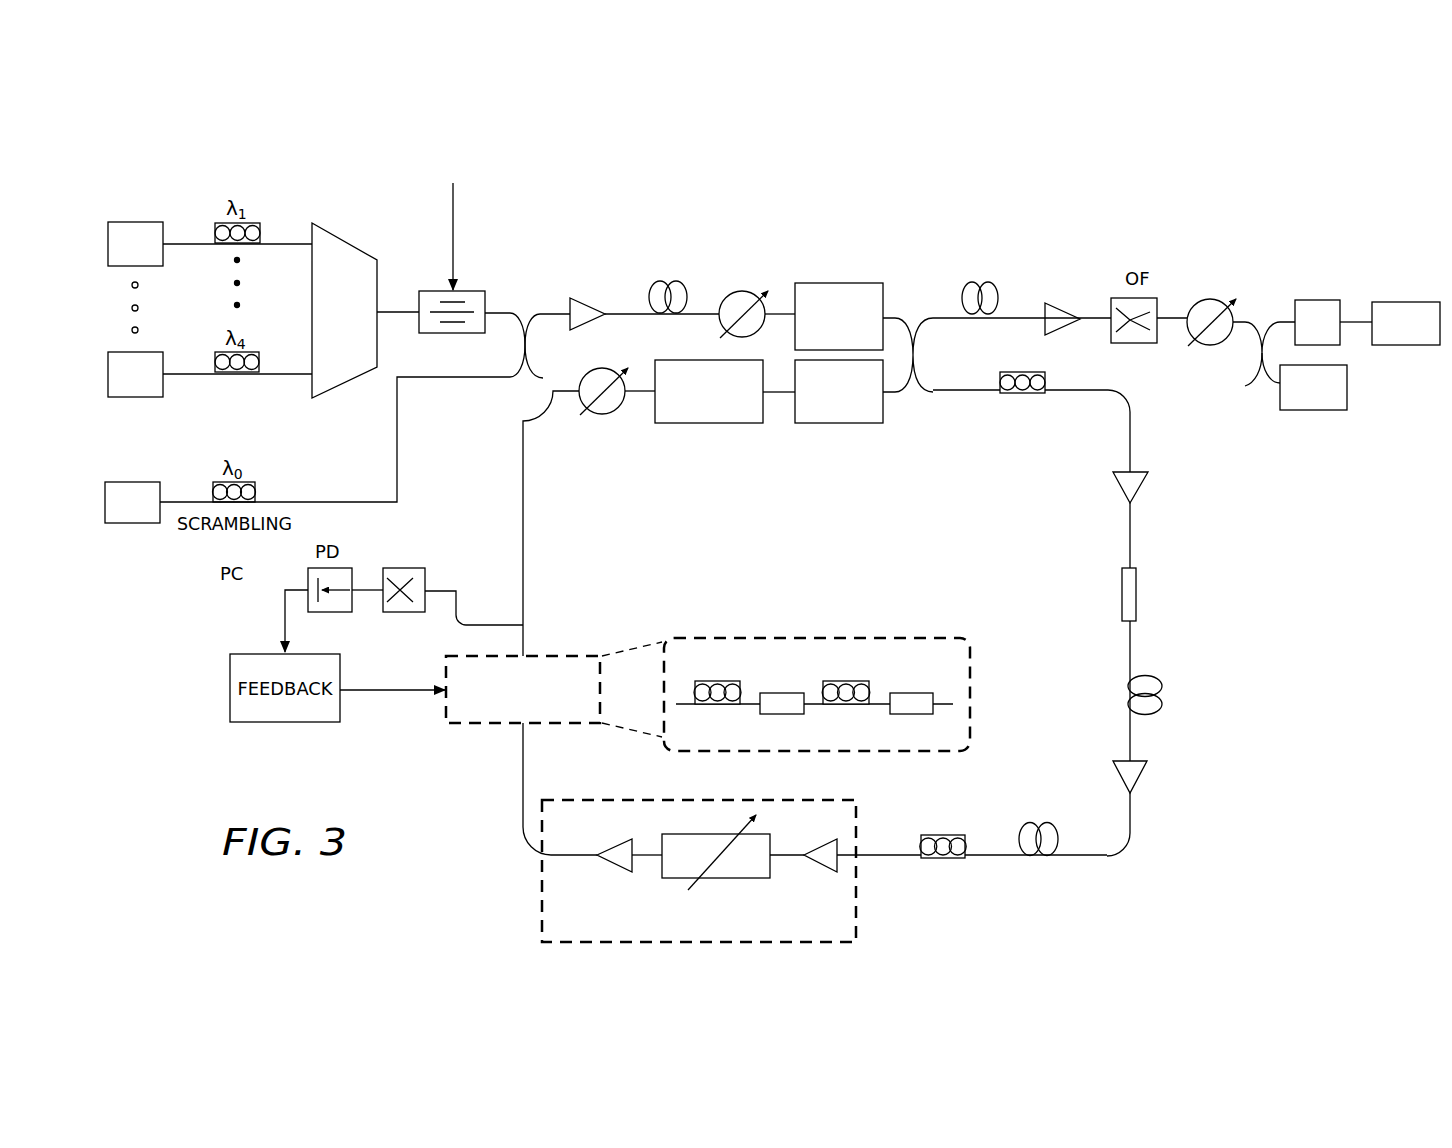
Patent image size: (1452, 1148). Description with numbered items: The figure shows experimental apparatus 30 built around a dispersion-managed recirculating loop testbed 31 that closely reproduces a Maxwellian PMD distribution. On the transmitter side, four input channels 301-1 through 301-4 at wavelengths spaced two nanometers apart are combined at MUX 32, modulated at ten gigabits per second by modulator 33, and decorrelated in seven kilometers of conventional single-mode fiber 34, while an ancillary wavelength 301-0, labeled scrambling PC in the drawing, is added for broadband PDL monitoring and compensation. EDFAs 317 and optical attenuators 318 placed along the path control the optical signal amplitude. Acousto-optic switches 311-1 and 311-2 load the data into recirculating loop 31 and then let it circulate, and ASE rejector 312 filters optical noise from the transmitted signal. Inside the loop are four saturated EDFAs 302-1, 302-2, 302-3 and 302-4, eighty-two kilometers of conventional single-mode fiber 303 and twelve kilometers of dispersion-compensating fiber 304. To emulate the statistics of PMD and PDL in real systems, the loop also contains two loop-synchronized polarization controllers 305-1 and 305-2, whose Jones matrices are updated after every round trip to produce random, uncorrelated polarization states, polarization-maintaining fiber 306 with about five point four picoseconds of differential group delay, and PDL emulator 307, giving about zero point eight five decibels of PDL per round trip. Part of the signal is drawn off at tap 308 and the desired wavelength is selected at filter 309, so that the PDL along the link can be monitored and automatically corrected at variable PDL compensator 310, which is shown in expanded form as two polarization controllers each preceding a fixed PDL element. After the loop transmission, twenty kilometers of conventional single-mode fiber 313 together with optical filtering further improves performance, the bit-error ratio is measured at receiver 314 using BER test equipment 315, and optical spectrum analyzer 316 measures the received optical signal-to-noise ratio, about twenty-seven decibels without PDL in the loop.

The experimental apparatus 30 is at (904, 143).
The recirculating loop testbed 31 is at (1226, 564).
The MUX 32 is at (340, 239).
The modulator 33 is at (432, 291).
The conventional single-mode fiber 34 is at (656, 282).
The input channel 301-1 is at (137, 222).
The input channel 301-4 is at (130, 398).
The ancillary wavelength 301-0 is at (130, 523).
The EDFA 302-1 is at (1142, 488).
The EDFA 302-2 is at (1140, 778).
The EDFA 302-3 is at (818, 872).
The EDFA 302-4 is at (612, 872).
The conventional single-mode fiber 303 is at (1162, 705).
The dispersion-compensating fiber 304 is at (1022, 823).
The loop-synchronized polarization controller 305-1 is at (1045, 380).
The loop-synchronized polarization controller 305-2 is at (942, 835).
The polarization-maintaining fiber 306 is at (1136, 594).
The PDL emulator 307 is at (704, 878).
The tap 308 is at (490, 625).
The filter 309 is at (405, 612).
The variable PDL compensator 310 is at (828, 638).
The acousto-optic switch 311-1 is at (840, 283).
The acousto-optic switch 311-2 is at (840, 423).
The ASE rejector 312 is at (710, 423).
The conventional single-mode fiber 313 is at (990, 282).
The receiver 314 is at (1318, 300).
The BER test equipment 315 is at (1405, 302).
The optical spectrum analyzer 316 is at (1318, 410).
The EDFA 317 is at (570, 300).
The optical attenuator 318 is at (748, 292).